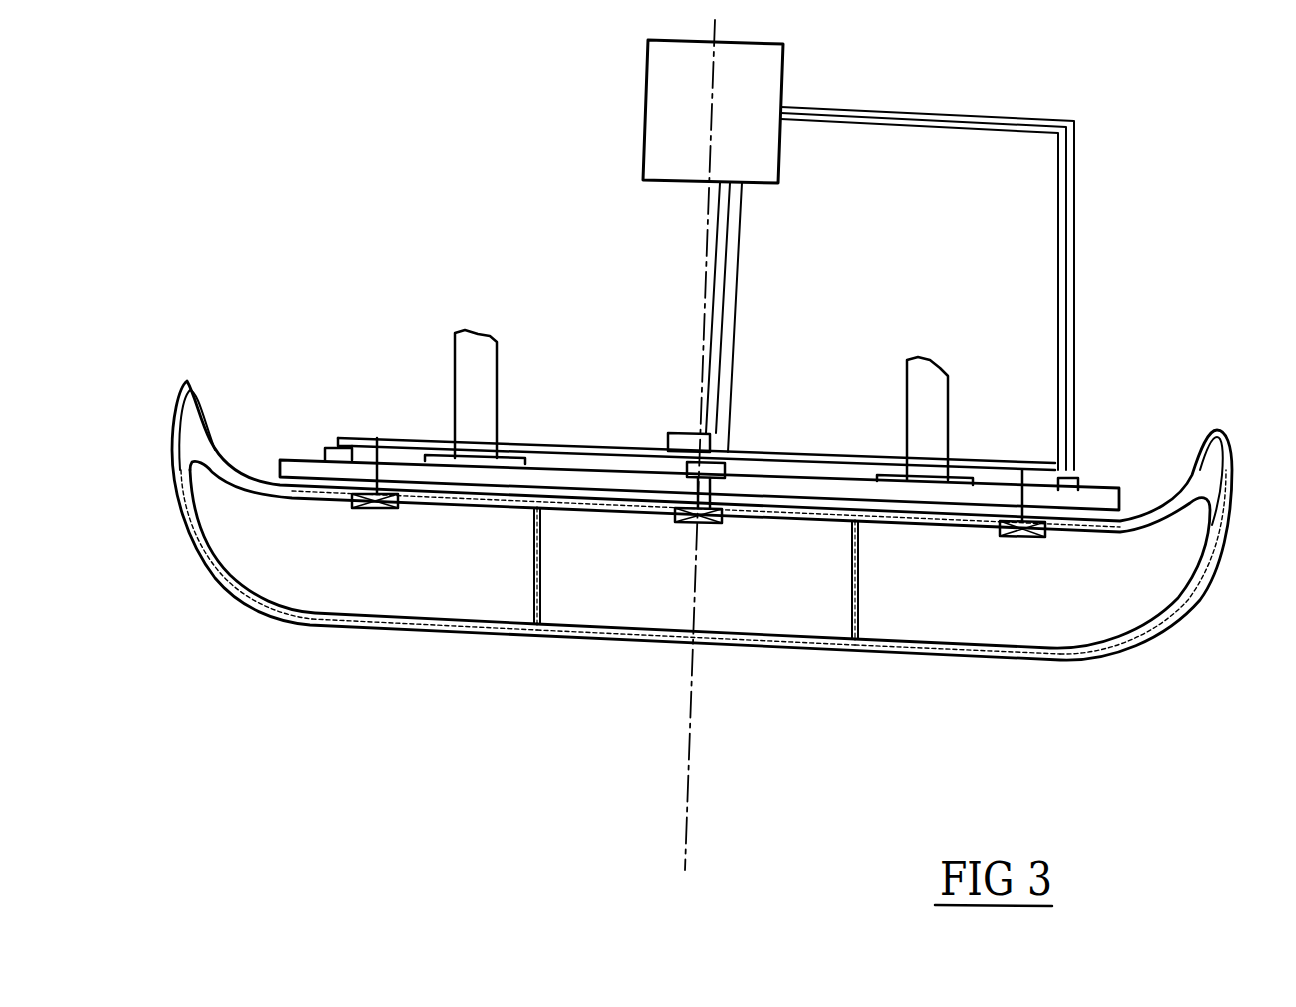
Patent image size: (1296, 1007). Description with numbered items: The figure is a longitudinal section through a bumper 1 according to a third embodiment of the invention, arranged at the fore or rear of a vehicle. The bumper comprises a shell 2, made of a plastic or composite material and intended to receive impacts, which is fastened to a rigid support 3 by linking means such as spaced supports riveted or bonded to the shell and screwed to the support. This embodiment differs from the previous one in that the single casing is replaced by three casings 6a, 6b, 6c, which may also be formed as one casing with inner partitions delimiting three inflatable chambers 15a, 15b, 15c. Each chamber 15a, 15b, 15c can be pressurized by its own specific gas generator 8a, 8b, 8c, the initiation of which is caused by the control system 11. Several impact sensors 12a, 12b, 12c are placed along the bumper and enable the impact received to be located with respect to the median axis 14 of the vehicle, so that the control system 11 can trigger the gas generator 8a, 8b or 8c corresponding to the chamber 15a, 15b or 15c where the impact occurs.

The bumper 1 is at (470, 676).
The shell 2 is at (1218, 540).
The rigid support 3 is at (1087, 502).
The casing 6a is at (358, 605).
The casing 6b is at (663, 642).
The casing 6c is at (1022, 660).
The gas generator 8a is at (340, 503).
The gas generator 8b is at (705, 528).
The gas generator 8c is at (995, 535).
The control system 11 is at (745, 90).
The impact sensor 12a is at (335, 448).
The impact sensor 12b is at (685, 437).
The impact sensor 12c is at (1072, 480).
The median axis 14 is at (687, 778).
The inflatable chamber 15a is at (300, 557).
The inflatable chamber 15b is at (605, 568).
The inflatable chamber 15c is at (1067, 593).